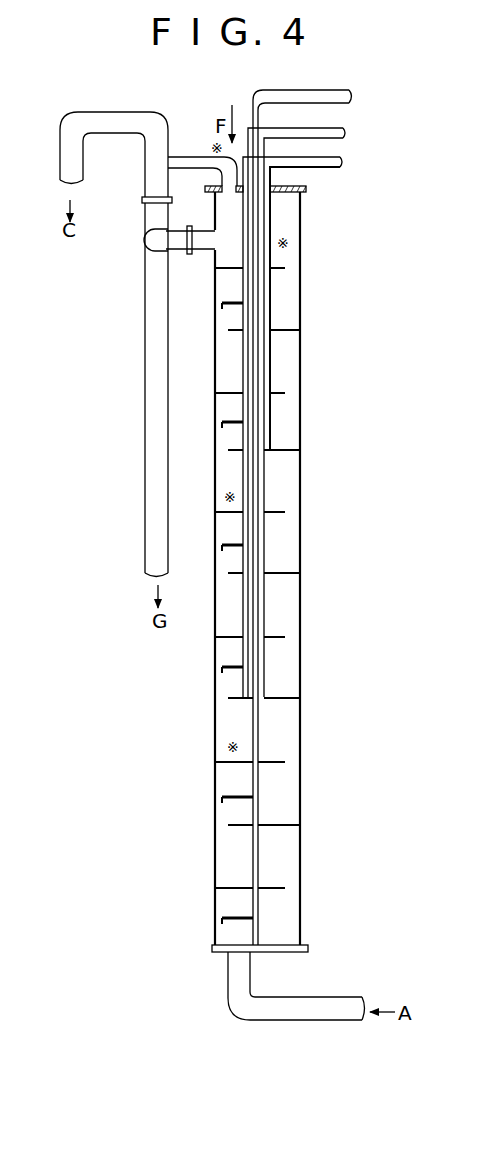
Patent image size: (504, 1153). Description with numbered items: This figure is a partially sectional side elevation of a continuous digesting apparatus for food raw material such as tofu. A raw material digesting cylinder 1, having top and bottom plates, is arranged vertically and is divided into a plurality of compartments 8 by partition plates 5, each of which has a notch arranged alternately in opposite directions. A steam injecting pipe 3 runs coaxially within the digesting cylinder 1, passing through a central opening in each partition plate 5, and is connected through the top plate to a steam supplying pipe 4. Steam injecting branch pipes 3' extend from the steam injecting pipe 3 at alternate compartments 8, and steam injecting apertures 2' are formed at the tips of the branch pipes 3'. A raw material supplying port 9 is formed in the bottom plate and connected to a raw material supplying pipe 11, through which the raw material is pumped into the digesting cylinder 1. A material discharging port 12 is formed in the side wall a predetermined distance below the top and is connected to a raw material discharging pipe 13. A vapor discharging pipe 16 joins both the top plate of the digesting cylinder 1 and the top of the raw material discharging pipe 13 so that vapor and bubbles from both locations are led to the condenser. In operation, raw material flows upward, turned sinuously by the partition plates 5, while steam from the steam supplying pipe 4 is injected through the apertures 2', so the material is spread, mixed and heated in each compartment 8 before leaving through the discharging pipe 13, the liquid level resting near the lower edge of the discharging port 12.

The raw material digesting cylinder 1 is at (302, 553).
The steam injecting apertures 2' is at (214, 578).
The steam injecting pipe 3 is at (298, 609).
The steam injecting branch pipes 3' is at (214, 613).
The steam supplying pipe 4 is at (237, 91).
The partition plates 5 is at (281, 268).
The compartments 8 is at (283, 434).
The raw material supplying port 9 is at (238, 940).
The raw material supplying pipe 11 is at (342, 999).
The material discharging port 12 is at (208, 250).
The raw material discharging pipe 13 is at (150, 494).
The vapor discharging pipe 16 is at (84, 112).